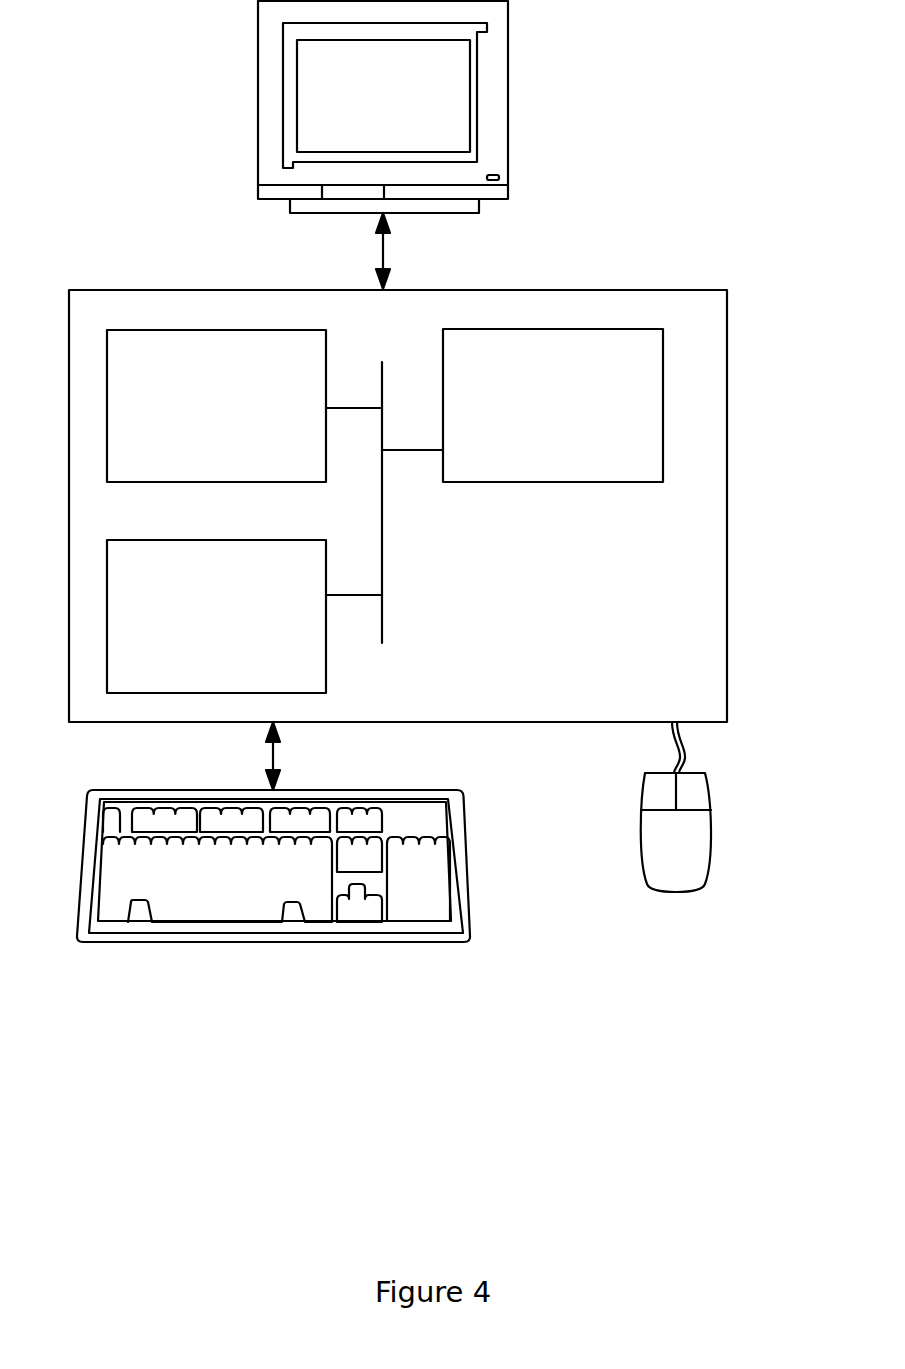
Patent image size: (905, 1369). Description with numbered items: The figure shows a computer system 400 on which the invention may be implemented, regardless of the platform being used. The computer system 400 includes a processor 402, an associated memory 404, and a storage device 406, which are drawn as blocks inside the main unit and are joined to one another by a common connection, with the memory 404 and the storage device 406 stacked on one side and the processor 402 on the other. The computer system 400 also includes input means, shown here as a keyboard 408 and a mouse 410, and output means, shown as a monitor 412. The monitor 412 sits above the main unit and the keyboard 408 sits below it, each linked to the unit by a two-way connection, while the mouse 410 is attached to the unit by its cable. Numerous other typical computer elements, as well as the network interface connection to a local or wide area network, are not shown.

The computer system 400 is at (703, 165).
The processor 402 is at (550, 417).
The memory 404 is at (197, 417).
The storage device 406 is at (192, 626).
The keyboard 408 is at (188, 901).
The mouse 410 is at (656, 847).
The monitor 412 is at (364, 111).